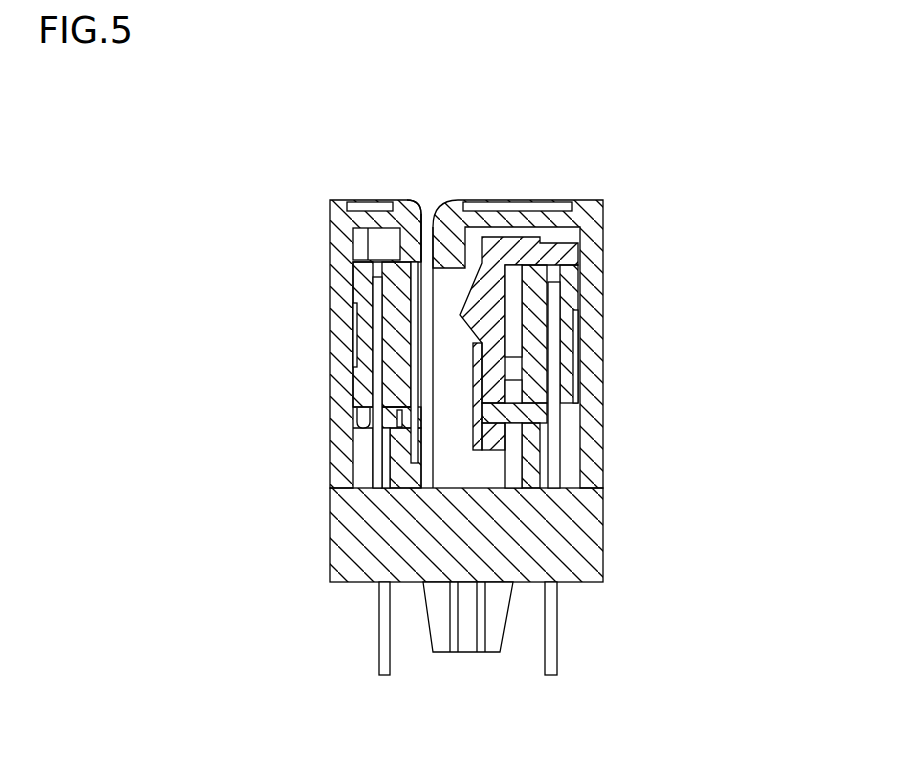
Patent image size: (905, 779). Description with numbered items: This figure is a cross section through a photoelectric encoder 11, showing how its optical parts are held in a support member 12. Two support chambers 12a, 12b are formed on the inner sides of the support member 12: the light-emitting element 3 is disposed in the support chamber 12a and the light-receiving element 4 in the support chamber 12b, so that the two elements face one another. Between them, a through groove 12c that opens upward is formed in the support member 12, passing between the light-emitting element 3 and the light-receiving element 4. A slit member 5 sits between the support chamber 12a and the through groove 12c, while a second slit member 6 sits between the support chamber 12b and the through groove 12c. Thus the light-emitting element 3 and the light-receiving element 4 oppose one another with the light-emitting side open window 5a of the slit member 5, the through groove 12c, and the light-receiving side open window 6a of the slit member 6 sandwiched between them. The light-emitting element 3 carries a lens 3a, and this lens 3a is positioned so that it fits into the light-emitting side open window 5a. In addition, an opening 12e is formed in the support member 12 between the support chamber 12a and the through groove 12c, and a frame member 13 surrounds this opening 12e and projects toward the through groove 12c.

The photoelectric encoder 11 is at (693, 108).
The support member 12 is at (331, 198).
The support chamber 12a is at (568, 450).
The support chamber 12b is at (365, 472).
The through groove 12c is at (428, 237).
The opening 12e is at (443, 323).
The frame member 13 is at (410, 243).
The light-emitting element 3 is at (565, 332).
The lens 3a is at (487, 302).
The light-receiving element 4 is at (363, 275).
The slit member 5 is at (477, 407).
The light-emitting side open window 5a is at (518, 345).
The slit member 6 is at (385, 392).
The light-receiving side open window 6a is at (417, 340).